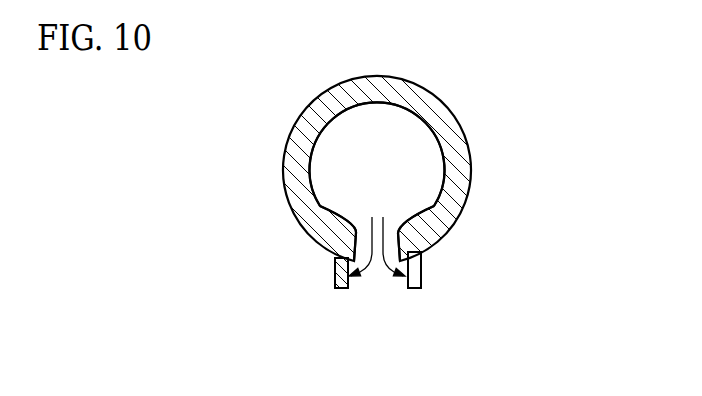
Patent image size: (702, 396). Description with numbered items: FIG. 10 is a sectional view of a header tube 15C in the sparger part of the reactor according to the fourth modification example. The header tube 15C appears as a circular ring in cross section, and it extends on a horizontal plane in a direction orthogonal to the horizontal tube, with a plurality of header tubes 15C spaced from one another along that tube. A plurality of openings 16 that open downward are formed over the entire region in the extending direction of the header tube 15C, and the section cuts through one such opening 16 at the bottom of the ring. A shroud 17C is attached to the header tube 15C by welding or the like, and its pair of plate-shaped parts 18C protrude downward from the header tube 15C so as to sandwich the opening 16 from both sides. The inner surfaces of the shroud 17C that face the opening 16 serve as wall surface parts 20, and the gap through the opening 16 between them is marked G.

The header tube 15C is at (458, 143).
The opening 16 is at (442, 191).
The wall surface part 20 is at (355, 256).
The plate-shaped part 18C is at (335, 273).
The shroud 17C is at (317, 198).
The gap G is at (385, 171).